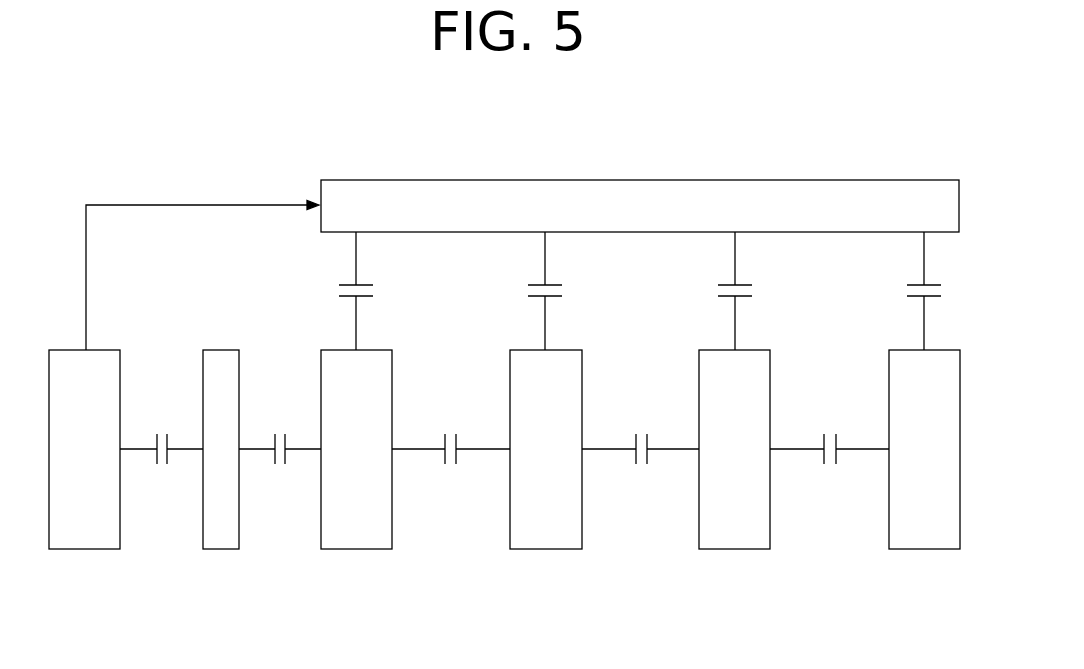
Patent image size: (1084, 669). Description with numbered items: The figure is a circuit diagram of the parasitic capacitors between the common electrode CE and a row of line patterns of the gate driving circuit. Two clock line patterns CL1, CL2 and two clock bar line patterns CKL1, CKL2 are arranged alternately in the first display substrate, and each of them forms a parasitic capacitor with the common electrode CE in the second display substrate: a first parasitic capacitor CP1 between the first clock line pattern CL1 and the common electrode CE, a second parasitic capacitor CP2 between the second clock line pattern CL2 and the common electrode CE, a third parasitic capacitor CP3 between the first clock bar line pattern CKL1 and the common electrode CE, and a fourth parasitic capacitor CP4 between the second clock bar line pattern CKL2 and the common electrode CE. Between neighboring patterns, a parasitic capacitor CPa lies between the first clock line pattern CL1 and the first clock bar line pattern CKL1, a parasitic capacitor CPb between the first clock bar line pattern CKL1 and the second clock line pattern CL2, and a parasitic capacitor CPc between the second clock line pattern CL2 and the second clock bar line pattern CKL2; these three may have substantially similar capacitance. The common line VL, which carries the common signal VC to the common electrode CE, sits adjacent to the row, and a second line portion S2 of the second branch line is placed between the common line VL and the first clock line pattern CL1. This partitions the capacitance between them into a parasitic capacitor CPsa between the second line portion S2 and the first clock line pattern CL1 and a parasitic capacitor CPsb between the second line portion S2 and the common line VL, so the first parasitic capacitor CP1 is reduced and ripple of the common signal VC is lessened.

The common electrode CE is at (871, 180).
The common signal VC is at (183, 276).
The common line VL is at (83, 549).
The second line portion S2 is at (222, 549).
The first clock line pattern CL1 is at (356, 549).
The first clock bar line pattern CKL1 is at (547, 549).
The second clock line pattern CL2 is at (735, 549).
The second clock bar line pattern CKL2 is at (923, 549).
The first parasitic capacitor CP1 is at (333, 291).
The second parasitic capacitor CP2 is at (711, 291).
The third parasitic capacitor CP3 is at (521, 291).
The fourth parasitic capacitor CP4 is at (900, 291).
The parasitic capacitor CPsb is at (161, 434).
The parasitic capacitor CPsa is at (280, 434).
The parasitic capacitor CPa is at (451, 434).
The parasitic capacitor CPb is at (640, 434).
The parasitic capacitor CPc is at (829, 434).